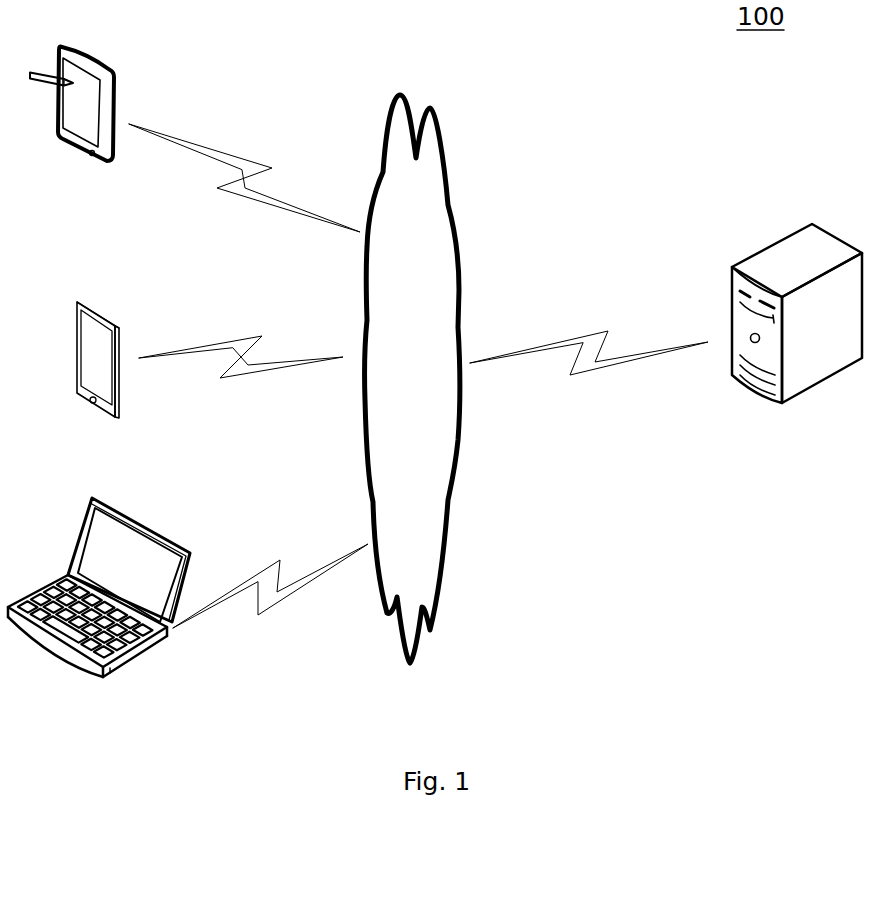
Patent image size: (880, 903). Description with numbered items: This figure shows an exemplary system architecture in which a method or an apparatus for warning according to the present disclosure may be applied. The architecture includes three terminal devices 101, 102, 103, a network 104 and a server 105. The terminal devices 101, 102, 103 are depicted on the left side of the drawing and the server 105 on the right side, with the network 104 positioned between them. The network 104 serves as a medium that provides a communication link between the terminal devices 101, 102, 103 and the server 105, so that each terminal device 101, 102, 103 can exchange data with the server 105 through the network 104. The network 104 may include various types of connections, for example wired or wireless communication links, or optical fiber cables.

The terminal device 101 is at (113, 92).
The terminal device 102 is at (118, 342).
The terminal device 103 is at (137, 518).
The network 104 is at (460, 265).
The server 105 is at (742, 390).